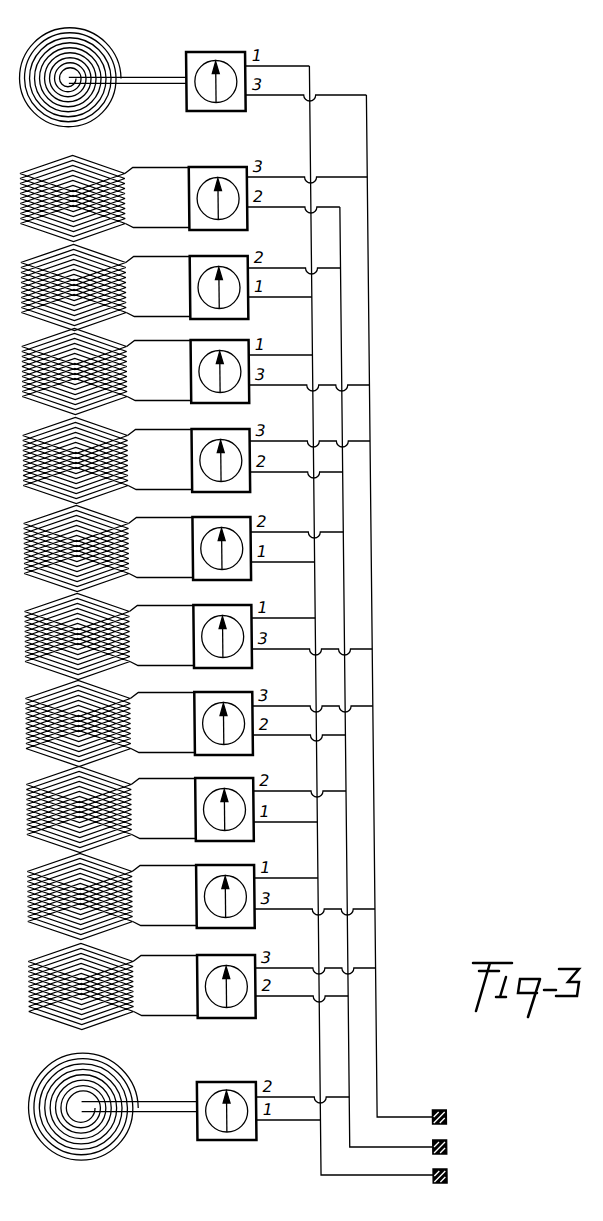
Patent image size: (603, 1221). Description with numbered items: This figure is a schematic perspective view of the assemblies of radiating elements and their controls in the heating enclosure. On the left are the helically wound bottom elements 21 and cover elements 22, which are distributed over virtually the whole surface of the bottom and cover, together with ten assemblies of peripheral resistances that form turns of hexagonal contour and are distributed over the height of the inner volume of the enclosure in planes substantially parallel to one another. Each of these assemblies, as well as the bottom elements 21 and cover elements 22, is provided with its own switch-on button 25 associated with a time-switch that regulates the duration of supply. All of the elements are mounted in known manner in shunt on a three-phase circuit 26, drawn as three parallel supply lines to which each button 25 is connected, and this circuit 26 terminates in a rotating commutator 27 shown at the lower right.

The bottom radiating elements 21 is at (104, 1077).
The cover radiating elements 22 is at (92, 53).
The switch-on button 25 is at (237, 103).
The three-phase circuit 26 is at (312, 578).
The rotating commutator 27 is at (435, 1175).